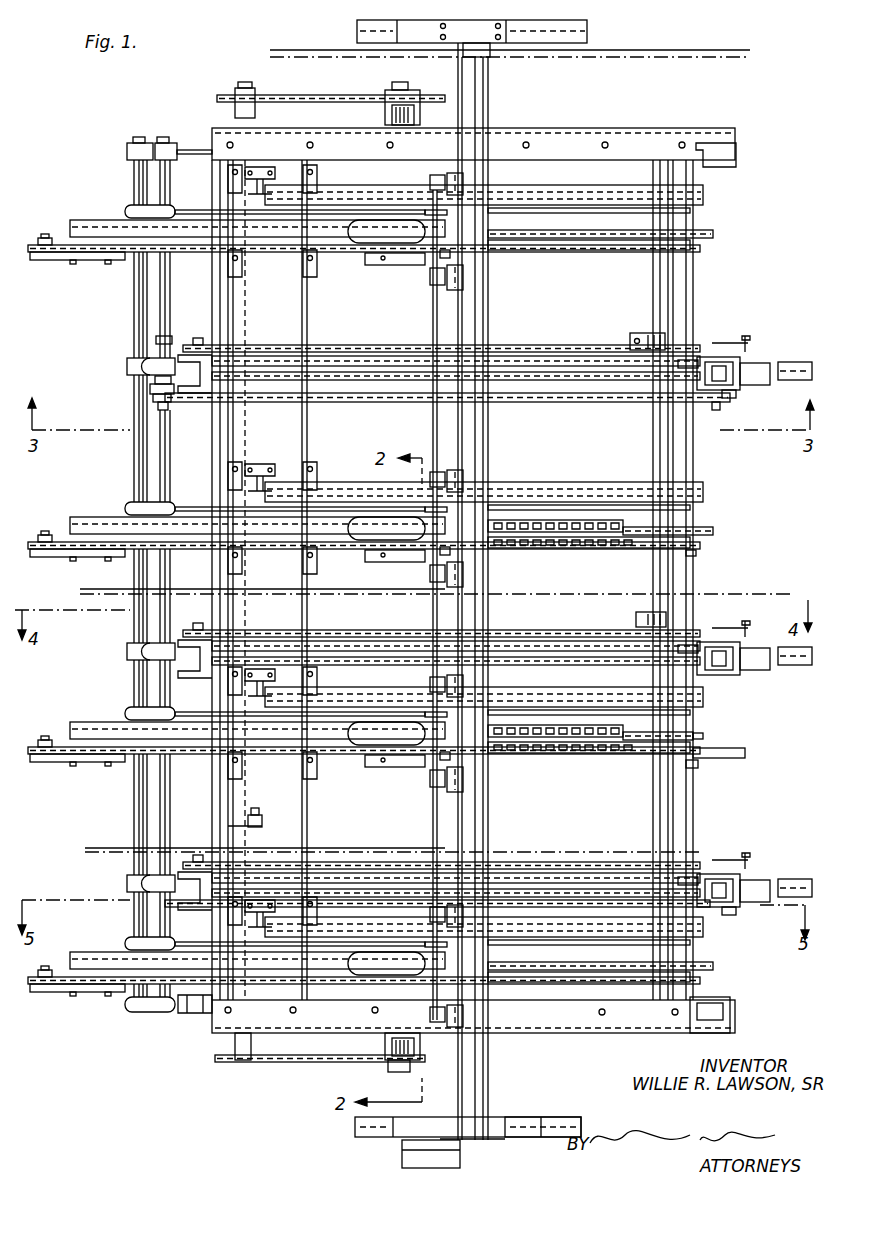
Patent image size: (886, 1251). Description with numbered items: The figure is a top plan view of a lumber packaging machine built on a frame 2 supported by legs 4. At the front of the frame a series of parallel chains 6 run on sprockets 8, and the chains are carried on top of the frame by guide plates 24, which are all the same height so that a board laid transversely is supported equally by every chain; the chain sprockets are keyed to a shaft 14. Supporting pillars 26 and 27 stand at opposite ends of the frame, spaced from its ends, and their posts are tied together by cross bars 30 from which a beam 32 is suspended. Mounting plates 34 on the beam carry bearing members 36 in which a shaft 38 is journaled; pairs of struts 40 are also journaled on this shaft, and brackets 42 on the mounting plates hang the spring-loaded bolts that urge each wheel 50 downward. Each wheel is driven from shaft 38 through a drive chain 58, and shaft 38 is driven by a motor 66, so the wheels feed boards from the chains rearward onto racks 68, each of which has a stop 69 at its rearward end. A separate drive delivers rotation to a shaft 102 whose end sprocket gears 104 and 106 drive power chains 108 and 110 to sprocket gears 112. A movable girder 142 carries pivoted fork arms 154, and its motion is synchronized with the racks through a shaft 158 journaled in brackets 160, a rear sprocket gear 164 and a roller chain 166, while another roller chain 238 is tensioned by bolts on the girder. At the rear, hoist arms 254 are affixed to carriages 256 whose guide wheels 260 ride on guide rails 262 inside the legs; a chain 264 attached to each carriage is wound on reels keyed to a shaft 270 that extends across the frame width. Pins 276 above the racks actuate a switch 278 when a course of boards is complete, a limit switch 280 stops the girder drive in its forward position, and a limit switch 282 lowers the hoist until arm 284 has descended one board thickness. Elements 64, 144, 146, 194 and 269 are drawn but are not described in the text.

The frame 2 is at (635, 132).
The legs 4 is at (185, 150).
The chains 6 is at (205, 252).
The sprockets 8 is at (44, 237).
The shaft 14 is at (138, 807).
The guide plates 24 is at (86, 225).
The supporting pillar 26 is at (590, 32).
The supporting pillar 27 is at (580, 1132).
The cross bars 30 is at (540, 45).
The beam 32 is at (476, 452).
The mounting plates 34 is at (465, 181).
The bearing members 36 is at (430, 181).
The shaft 38 is at (432, 442).
The struts 40 is at (448, 213).
The brackets 42 is at (410, 262).
The wheel 50 is at (372, 232).
The drive chain 58 is at (451, 255).
The bar 64 is at (86, 970).
The motor 66 is at (402, 1158).
The racks 68 is at (637, 250).
The stop 69 is at (715, 233).
The shaft 102 is at (412, 1072).
The sprocket gear 104 is at (235, 1050).
The sprocket gear 106 is at (235, 105).
The power chain 108 is at (300, 1062).
The power chain 110 is at (316, 96).
The sprocket gears 112 is at (400, 90).
The girder 142 is at (290, 417).
The bracket 144 is at (307, 268).
The bracket 146 is at (276, 472).
The fork arms 154 is at (612, 200).
The shaft 158 is at (156, 340).
The brackets 160 is at (160, 1008).
The sprocket gear 164 is at (716, 411).
The roller chain 166 is at (574, 403).
The pin 194 is at (740, 343).
The roller chain 238 is at (565, 340).
The arms 254 is at (797, 381).
The carriage 256 is at (738, 396).
The guide wheels 260 is at (760, 365).
The guide rails 262 is at (748, 360).
The chain 264 is at (690, 360).
The bracket 269 is at (690, 878).
The shaft 270 is at (662, 425).
The pins 276 is at (697, 554).
The switch 278 is at (645, 618).
The limit switch 280 is at (268, 808).
The limit switch 282 is at (700, 768).
The arm 284 is at (746, 755).